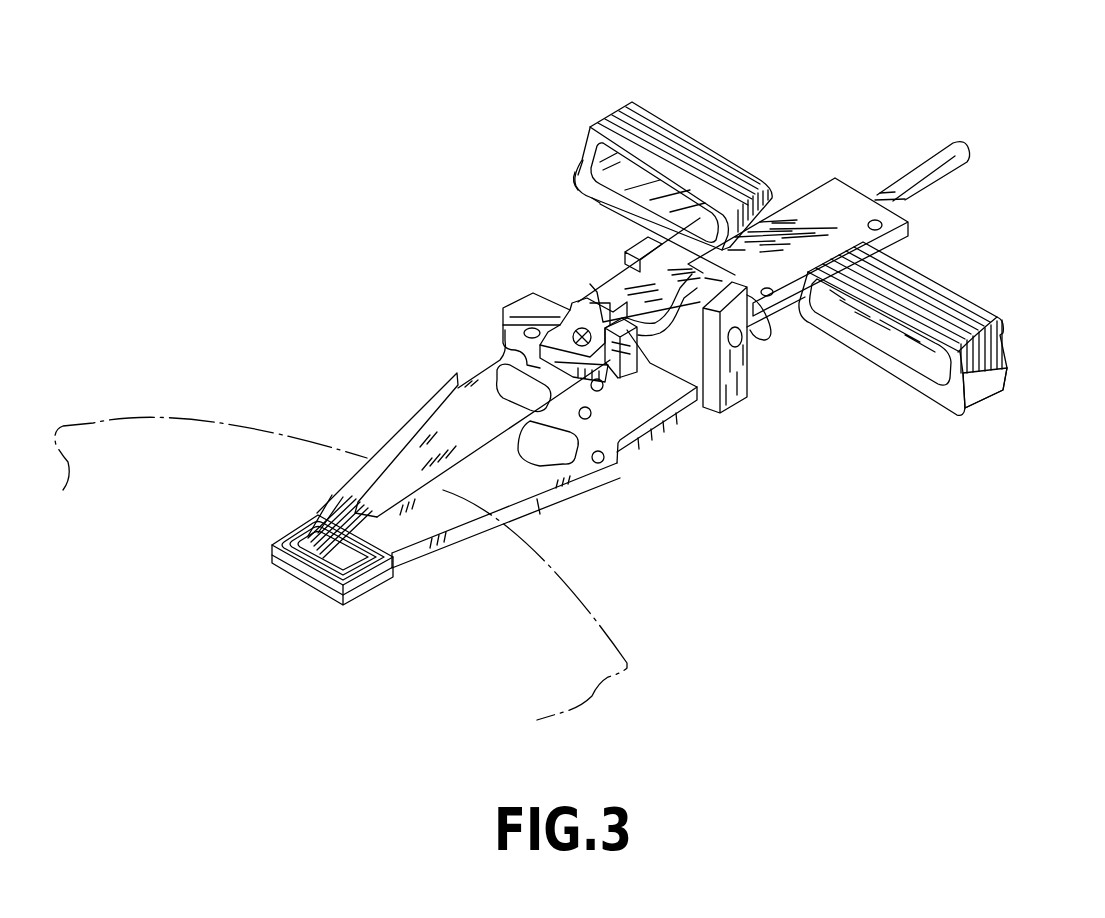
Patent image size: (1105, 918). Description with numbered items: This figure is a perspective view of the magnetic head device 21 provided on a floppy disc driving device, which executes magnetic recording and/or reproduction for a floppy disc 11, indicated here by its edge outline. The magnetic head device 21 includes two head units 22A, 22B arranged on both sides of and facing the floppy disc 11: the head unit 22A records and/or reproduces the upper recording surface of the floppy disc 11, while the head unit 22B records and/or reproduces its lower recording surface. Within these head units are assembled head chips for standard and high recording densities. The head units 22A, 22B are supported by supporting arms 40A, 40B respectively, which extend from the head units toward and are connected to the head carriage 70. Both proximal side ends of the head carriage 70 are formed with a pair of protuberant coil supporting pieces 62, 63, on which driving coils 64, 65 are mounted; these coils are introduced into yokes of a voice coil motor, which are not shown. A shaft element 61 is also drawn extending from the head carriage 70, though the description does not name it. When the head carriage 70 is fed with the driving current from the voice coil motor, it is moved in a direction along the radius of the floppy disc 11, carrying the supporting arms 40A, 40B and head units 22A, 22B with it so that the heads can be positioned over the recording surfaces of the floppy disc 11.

The floppy disc 11 is at (134, 445).
The magnetic head device 21 is at (587, 100).
The head unit 22A is at (290, 540).
The head unit 22B is at (378, 587).
The supporting arm 40A is at (480, 387).
The supporting arm 40B is at (520, 497).
The pivot shaft 61 is at (940, 179).
The coil supporting piece 62 is at (990, 388).
The coil supporting piece 63 is at (575, 170).
The driving coil 64 is at (963, 310).
The driving coil 65 is at (699, 150).
The head carriage 70 is at (815, 216).